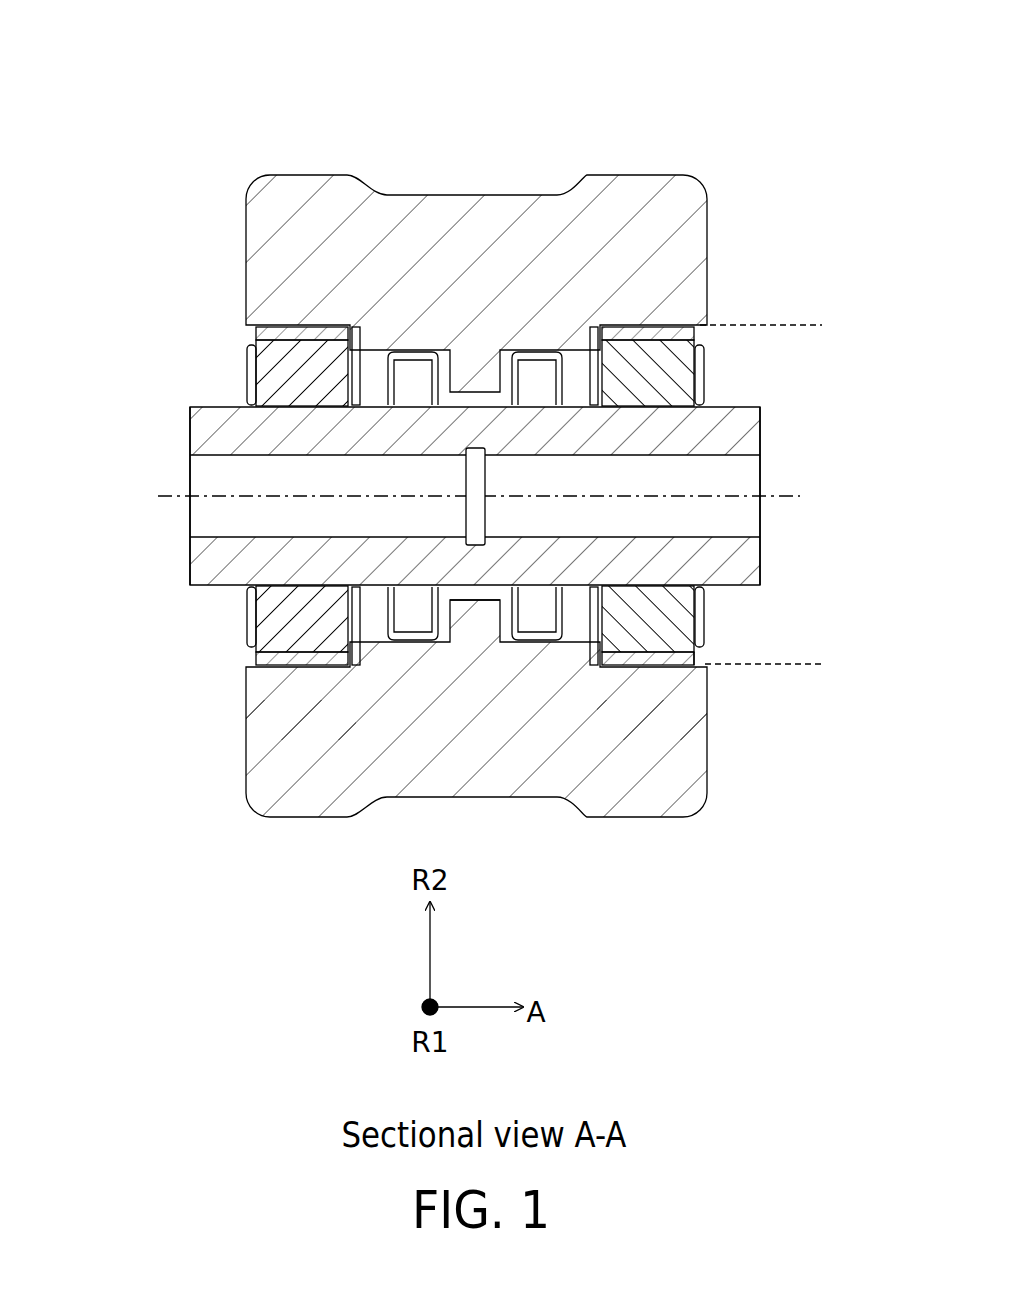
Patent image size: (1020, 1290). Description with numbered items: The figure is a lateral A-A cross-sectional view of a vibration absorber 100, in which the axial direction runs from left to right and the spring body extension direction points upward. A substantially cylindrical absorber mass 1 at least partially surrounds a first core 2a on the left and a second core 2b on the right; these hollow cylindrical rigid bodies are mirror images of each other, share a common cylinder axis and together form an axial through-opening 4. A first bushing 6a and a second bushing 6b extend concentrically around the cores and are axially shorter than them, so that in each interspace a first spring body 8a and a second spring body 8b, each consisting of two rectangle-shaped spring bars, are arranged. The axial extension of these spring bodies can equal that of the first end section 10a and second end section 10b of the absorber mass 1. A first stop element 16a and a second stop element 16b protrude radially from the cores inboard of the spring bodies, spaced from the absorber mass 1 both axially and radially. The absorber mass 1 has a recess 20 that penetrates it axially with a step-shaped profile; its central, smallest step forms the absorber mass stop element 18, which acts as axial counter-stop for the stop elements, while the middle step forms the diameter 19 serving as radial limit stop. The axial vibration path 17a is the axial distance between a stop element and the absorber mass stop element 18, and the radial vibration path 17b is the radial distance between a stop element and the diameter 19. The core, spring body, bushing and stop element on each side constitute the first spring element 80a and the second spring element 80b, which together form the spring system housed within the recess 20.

The vibration absorber 100 is at (474, 452).
The absorber mass 1 is at (288, 803).
The first core 2a is at (213, 430).
The second core 2b is at (735, 428).
The through-opening 4 is at (202, 471).
The first bushing 6a is at (307, 667).
The second bushing 6b is at (633, 668).
The first spring body 8a is at (305, 376).
The second spring body 8b is at (655, 370).
The first end section of the absorber mass 10a is at (357, 838).
The second end section of the absorber mass 10b is at (700, 838).
The first stop element 16a is at (412, 380).
The second stop element 16b is at (541, 380).
The axial vibration path 17a is at (443, 608).
The radial vibration path 17b is at (550, 355).
The absorber mass stop element 18 is at (477, 448).
The diameter of the absorber mass 19 is at (540, 645).
The recess 20 is at (822, 325).
The first spring element 80a is at (165, 560).
The second spring element 80b is at (772, 562).